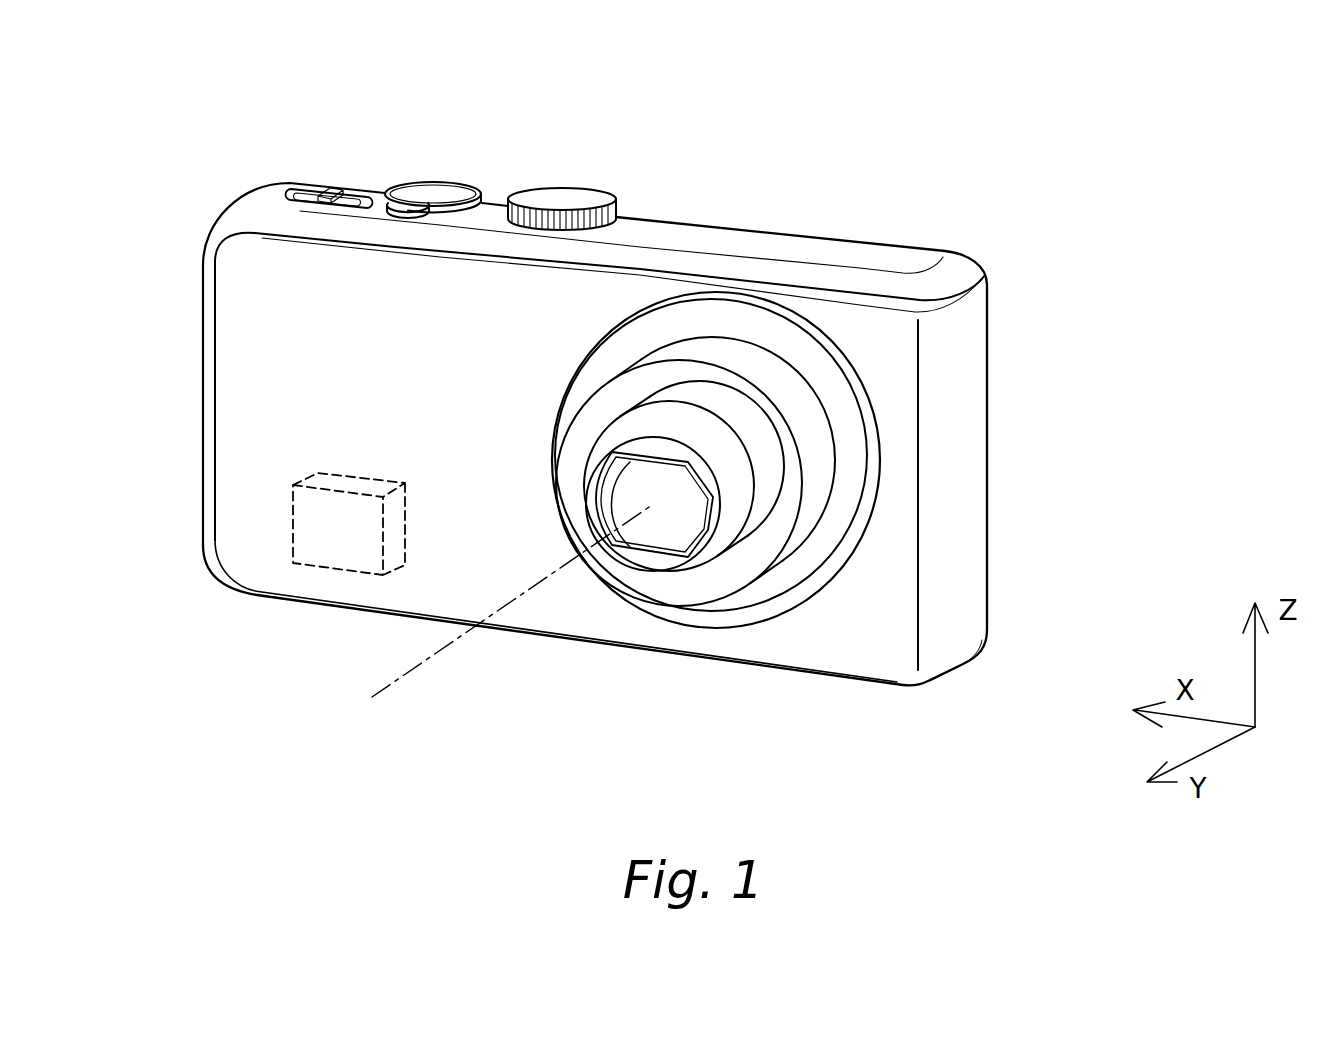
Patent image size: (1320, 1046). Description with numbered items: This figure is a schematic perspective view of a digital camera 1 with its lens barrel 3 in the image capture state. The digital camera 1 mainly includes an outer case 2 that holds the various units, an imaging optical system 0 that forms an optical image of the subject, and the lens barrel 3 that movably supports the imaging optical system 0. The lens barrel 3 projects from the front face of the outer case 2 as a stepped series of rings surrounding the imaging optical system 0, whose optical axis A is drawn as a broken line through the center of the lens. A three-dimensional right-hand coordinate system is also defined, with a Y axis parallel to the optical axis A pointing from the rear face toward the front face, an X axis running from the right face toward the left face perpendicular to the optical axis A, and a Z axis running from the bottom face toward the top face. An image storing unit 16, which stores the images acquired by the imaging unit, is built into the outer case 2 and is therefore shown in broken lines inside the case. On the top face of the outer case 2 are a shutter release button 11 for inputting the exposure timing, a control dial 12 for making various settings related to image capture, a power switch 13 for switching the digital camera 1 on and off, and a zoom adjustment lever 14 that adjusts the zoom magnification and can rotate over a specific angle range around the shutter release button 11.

The digital camera 1 is at (1028, 163).
The outer case 2 is at (857, 240).
The lens barrel 3 is at (648, 617).
The imaging optical system 0 is at (634, 550).
The optical axis A is at (498, 615).
The shutter release button 11 is at (433, 192).
The control dial 12 is at (568, 198).
The power switch 13 is at (325, 189).
The zoom adjustment lever 14 is at (407, 205).
The image storing unit 16 is at (310, 529).